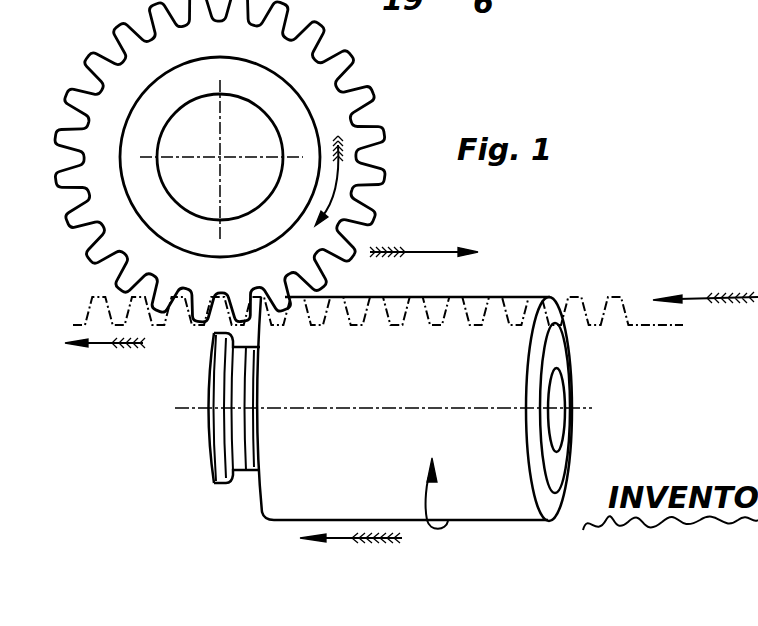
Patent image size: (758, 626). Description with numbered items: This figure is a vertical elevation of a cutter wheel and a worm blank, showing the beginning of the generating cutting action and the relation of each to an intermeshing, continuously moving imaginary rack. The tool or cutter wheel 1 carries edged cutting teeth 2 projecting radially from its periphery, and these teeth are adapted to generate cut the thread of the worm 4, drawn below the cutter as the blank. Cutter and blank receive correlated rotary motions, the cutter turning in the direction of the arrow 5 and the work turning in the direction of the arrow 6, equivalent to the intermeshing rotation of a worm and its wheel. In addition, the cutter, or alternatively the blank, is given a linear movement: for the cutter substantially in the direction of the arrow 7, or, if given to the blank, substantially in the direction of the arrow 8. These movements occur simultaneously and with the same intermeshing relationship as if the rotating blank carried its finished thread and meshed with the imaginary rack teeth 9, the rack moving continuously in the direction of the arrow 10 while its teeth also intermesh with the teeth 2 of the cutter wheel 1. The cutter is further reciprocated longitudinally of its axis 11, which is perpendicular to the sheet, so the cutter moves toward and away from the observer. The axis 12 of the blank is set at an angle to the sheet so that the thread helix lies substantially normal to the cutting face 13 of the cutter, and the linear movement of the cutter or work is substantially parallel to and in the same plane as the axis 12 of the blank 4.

The cutter wheel 1 is at (293, 118).
The cutting teeth 2 is at (350, 100).
The worm 4 is at (551, 357).
The arrow 5 is at (348, 192).
The arrow 6 is at (427, 498).
The arrow 7 is at (417, 252).
The arrow 8 is at (338, 540).
The imaginary rack teeth 9 is at (93, 298).
The arrow 10 is at (93, 345).
The axis of the cutter 11 is at (221, 156).
The axis of the worm wheel blank 12 is at (199, 410).
The cutting face 13 is at (148, 58).